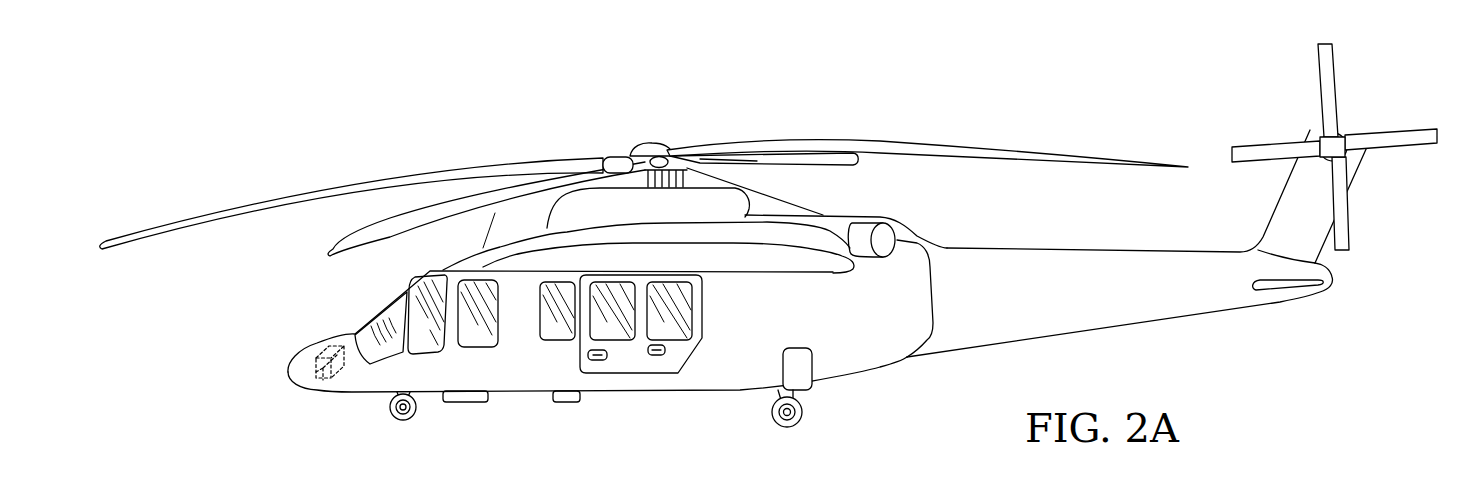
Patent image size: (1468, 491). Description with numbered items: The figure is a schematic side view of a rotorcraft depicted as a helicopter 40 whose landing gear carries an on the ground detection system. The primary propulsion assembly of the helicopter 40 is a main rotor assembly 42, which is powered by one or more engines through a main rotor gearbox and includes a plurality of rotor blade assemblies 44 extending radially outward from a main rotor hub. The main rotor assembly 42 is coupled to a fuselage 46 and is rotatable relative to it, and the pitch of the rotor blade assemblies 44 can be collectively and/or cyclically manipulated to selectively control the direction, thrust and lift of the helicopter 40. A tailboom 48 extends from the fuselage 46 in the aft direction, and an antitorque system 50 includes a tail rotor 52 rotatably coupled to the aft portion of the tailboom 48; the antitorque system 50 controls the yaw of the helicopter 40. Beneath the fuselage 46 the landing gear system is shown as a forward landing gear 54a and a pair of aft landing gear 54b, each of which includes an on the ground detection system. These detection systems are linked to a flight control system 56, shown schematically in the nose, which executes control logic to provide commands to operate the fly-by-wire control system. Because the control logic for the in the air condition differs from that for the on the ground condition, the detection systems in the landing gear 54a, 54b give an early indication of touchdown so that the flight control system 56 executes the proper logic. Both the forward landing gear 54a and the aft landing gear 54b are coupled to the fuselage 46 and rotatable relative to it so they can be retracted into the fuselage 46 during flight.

The helicopter 40 is at (796, 110).
The main rotor assembly 42 is at (648, 138).
The rotor blade assemblies 44 is at (1057, 152).
The fuselage 46 is at (518, 396).
The tailboom 48 is at (1174, 318).
The antitorque system 50 is at (1310, 128).
The tail rotor 52 is at (1347, 160).
The forward landing gear 54a is at (403, 421).
The aft landing gear 54b is at (792, 428).
The flight control system 56 is at (302, 352).